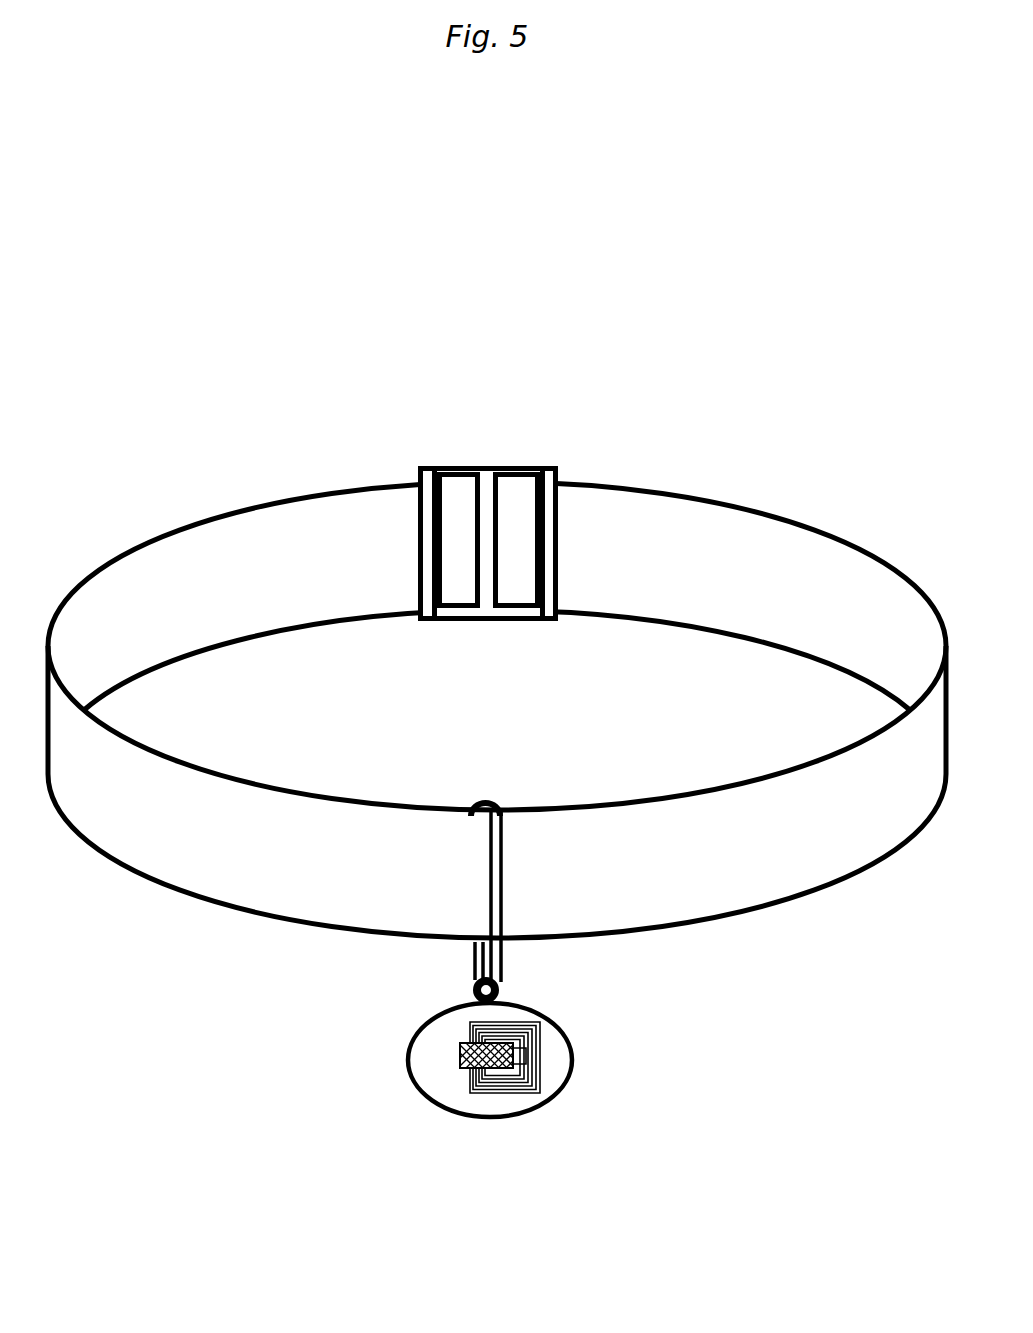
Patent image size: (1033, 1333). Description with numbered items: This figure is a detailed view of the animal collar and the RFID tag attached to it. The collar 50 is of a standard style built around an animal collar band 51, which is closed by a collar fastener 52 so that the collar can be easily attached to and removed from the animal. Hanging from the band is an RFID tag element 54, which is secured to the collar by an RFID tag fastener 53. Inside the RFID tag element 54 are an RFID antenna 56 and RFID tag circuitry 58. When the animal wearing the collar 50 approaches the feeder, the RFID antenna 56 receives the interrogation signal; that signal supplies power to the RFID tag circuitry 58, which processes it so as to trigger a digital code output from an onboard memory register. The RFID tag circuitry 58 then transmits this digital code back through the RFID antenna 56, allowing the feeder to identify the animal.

The collar 50 is at (210, 495).
The animal collar band 51 is at (275, 547).
The collar fastener 52 is at (487, 480).
The RFID tag fastener 53 is at (498, 984).
The RFID tag element 54 is at (432, 1060).
The RFID antenna 56 is at (533, 1063).
The RFID tag circuitry 58 is at (500, 1067).